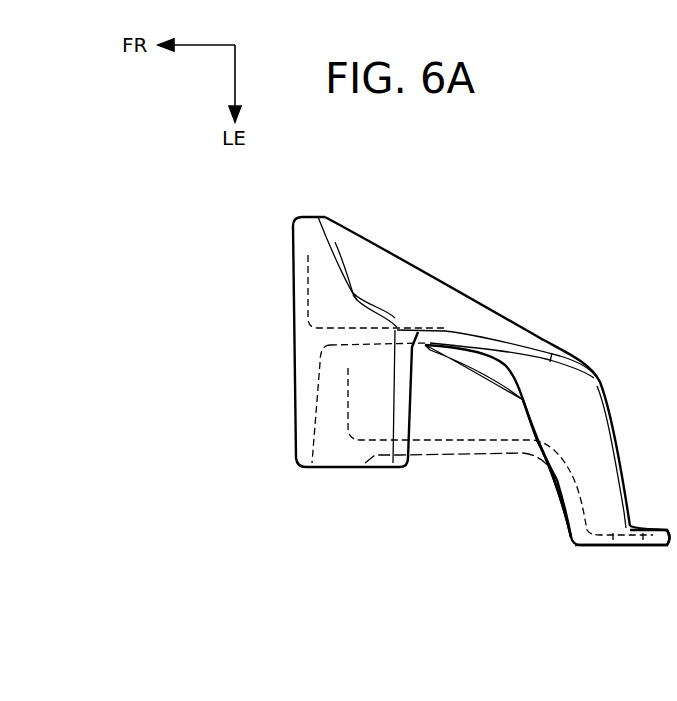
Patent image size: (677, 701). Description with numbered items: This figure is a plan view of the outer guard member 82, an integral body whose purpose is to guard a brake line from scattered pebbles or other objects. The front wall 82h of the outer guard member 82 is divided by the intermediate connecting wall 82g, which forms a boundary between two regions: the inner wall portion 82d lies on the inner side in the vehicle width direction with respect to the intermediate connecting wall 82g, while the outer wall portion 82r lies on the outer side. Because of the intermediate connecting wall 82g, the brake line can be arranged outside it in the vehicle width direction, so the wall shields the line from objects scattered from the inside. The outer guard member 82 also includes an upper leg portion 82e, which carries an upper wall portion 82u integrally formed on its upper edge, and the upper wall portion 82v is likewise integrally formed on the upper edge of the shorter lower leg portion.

The outer guard member 82 is at (535, 290).
The inner wall portion 82d is at (293, 232).
The front wall 82h is at (291, 267).
The intermediate connecting wall 82g is at (433, 335).
The outer wall portion 82r is at (297, 385).
The upper wall portion 82u is at (575, 442).
The upper leg portion 82e is at (558, 494).
The upper wall portion 82v is at (600, 538).